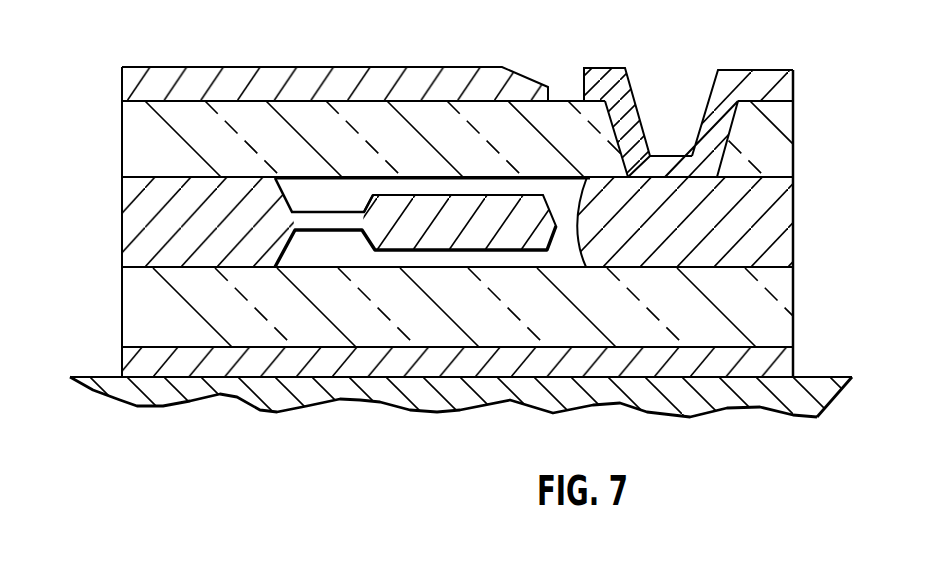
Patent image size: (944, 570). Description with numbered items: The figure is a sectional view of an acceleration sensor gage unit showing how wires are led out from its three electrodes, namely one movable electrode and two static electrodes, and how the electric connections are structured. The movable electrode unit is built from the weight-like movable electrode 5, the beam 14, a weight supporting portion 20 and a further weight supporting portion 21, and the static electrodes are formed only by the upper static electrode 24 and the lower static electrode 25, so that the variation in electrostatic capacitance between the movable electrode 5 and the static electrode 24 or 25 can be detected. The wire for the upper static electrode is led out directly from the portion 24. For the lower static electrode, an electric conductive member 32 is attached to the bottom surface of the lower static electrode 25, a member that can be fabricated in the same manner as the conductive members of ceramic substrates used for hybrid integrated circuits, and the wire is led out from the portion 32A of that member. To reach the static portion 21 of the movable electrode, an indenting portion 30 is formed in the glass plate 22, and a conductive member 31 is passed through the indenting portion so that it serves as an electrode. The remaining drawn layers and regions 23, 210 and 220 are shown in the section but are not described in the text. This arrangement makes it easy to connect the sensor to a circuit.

The movable electrode 5 is at (515, 210).
The beam 14 is at (305, 212).
The weight supporting portion 20 is at (128, 227).
The weight supporting portion 21 is at (778, 208).
The glass plate 22 is at (790, 133).
The lower layer 23 is at (780, 303).
The upper static electrode 24 is at (383, 78).
The lower static electrode 25 is at (793, 358).
The indenting portion 30 is at (648, 105).
The conductive member 31 is at (760, 63).
The electric conductive member 32 is at (380, 393).
The wire lead-out portion 32A is at (820, 403).
The contact region 210 is at (662, 180).
The upper layer region 220 is at (130, 138).